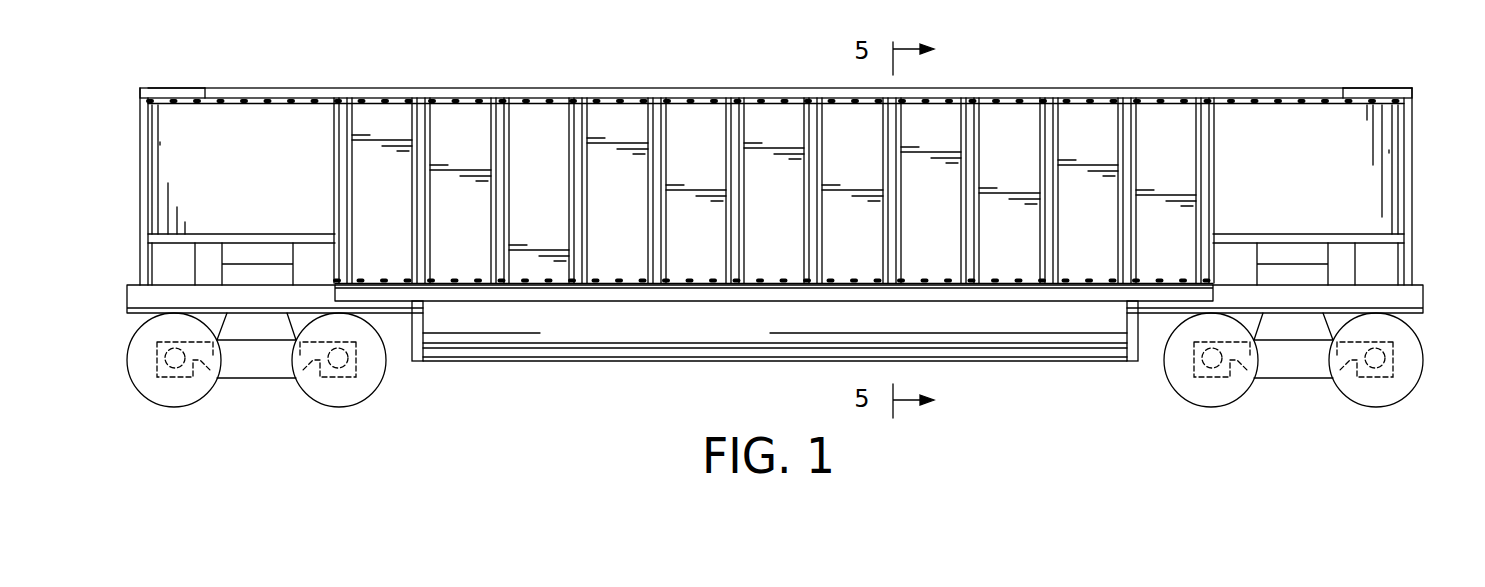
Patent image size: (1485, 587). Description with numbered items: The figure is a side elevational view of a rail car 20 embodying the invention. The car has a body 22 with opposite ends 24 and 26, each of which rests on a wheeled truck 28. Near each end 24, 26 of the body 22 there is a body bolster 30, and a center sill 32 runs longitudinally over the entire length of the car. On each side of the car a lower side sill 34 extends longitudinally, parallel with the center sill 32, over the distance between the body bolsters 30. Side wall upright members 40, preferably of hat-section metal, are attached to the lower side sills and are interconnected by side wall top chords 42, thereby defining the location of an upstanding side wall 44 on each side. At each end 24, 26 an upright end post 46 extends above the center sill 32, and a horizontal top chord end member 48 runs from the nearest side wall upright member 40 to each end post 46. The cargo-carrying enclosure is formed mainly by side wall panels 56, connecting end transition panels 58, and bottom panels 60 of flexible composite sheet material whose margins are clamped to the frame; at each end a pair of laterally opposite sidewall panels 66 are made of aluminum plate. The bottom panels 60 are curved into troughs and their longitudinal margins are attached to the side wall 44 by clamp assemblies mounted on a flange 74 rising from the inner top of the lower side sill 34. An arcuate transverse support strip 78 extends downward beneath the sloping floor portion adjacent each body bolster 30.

The rail car 20 is at (942, 64).
The body 22 is at (517, 77).
The end of the body 24 is at (1425, 285).
The end of the body 26 is at (127, 287).
The wheeled truck 28 is at (260, 367).
The body bolster 30 is at (253, 272).
The center sill 32 is at (312, 293).
The lower side sill 34 is at (615, 297).
The side wall upright member 40 is at (510, 232).
The side wall top chord 42 is at (657, 90).
The side wall 44 is at (1017, 125).
The end post 46 is at (138, 197).
The top chord end member 48 is at (181, 92).
The side wall panel 56 is at (843, 120).
The end transition panel 58 is at (277, 130).
The bottom panel 60 is at (713, 327).
The sidewall panel 66 is at (393, 130).
The flange 74 is at (708, 277).
The transverse support strip 78 is at (412, 342).